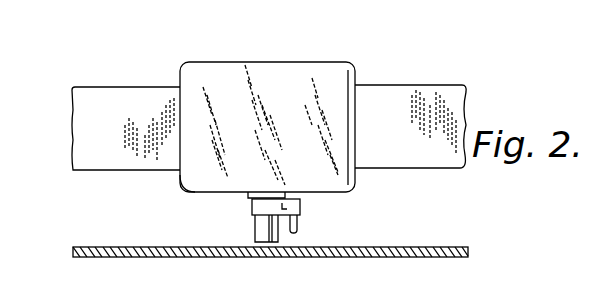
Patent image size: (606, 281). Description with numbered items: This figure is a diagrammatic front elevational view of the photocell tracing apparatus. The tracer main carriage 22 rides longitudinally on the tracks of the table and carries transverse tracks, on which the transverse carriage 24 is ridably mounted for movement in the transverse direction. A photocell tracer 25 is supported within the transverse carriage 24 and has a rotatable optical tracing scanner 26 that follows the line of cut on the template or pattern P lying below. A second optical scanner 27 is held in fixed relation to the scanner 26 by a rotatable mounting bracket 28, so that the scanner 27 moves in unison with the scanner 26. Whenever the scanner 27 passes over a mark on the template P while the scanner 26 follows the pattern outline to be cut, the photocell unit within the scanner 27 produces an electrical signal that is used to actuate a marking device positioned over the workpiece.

The tracer main carriage 22 is at (110, 100).
The transverse carriage 24 is at (282, 70).
The photocell tracer 25 is at (176, 181).
The optical scanner 26 is at (262, 226).
The second optical scanner 27 is at (299, 222).
The rotatable mounting bracket 28 is at (252, 207).
The template or pattern P is at (418, 246).